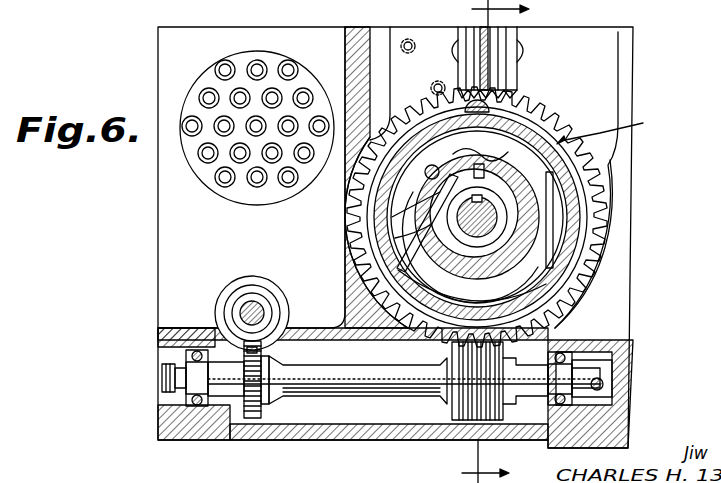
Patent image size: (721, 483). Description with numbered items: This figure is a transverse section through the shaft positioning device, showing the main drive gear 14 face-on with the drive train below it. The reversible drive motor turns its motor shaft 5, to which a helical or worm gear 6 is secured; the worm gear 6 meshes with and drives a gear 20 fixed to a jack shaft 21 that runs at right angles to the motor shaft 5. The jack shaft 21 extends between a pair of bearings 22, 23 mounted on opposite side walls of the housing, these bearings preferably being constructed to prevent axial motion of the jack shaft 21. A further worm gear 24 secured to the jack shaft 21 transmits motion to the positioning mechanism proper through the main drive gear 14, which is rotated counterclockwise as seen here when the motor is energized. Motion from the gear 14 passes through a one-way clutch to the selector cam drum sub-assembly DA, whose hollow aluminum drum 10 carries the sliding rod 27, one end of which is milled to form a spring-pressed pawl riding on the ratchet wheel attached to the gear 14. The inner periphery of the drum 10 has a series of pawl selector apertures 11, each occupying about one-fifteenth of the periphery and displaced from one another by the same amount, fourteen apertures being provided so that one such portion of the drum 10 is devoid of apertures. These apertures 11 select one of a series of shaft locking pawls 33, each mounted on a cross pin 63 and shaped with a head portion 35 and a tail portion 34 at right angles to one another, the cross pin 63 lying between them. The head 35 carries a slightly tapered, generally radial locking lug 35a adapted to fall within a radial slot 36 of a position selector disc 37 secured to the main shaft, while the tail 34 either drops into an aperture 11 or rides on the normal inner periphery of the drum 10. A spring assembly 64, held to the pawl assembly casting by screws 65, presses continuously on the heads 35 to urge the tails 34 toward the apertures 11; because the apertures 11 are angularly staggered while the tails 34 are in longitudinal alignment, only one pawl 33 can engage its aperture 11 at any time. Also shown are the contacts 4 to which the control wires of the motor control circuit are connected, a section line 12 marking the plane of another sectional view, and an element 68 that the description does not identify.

The contacts 4 is at (209, 92).
The motor shaft 5 is at (245, 314).
The worm gear 6 is at (248, 290).
The selector cam drum 10 is at (555, 122).
The pawl selector apertures 11 is at (348, 264).
The section line 12 is at (508, 241).
The main drive gear 14 is at (565, 304).
The gear 20 is at (252, 418).
The jack shaft 21 is at (383, 385).
The bearing 22 is at (162, 390).
The bearing 23 is at (602, 393).
The worm gear 24 is at (475, 400).
The sliding rod 27 is at (492, 98).
The shaft locking pawls 33 is at (390, 217).
The tail portion 34 is at (395, 238).
The head portion 35 is at (482, 161).
The radial lug 35a is at (439, 165).
The radial slot 36 is at (561, 182).
The position selector disc 37 is at (510, 230).
The cross pin 63 is at (427, 160).
The spring assembly 64 is at (558, 165).
The screws 65 is at (583, 260).
The lever 68 is at (453, 194).
The selector cam drum sub-assembly DA is at (611, 129).